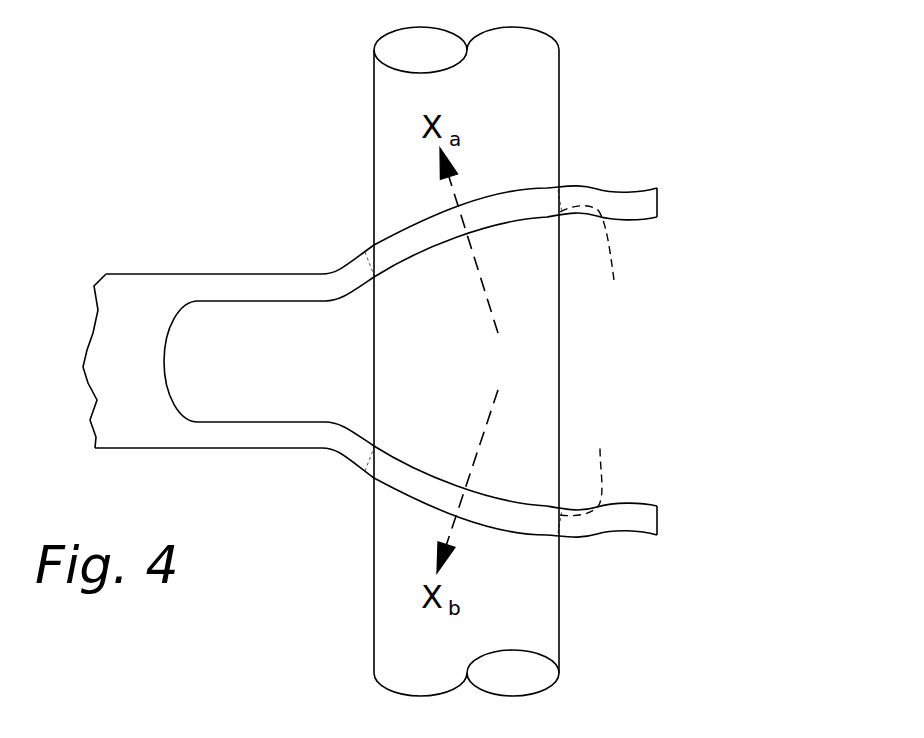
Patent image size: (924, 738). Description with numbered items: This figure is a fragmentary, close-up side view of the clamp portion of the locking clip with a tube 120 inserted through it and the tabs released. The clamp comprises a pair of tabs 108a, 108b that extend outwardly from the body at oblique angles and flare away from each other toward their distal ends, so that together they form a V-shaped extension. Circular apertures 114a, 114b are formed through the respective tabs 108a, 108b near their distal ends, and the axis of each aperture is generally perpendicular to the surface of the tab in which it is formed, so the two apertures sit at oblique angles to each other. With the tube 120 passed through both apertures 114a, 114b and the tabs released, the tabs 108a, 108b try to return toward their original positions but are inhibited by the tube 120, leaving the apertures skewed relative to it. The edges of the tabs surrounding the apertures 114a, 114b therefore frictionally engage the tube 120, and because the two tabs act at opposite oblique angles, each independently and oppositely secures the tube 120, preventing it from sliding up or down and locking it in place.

The tube 120 is at (374, 187).
The tab 108a is at (657, 198).
The tab 108b is at (657, 527).
The circular aperture 114a is at (606, 259).
The circular aperture 114b is at (600, 465).